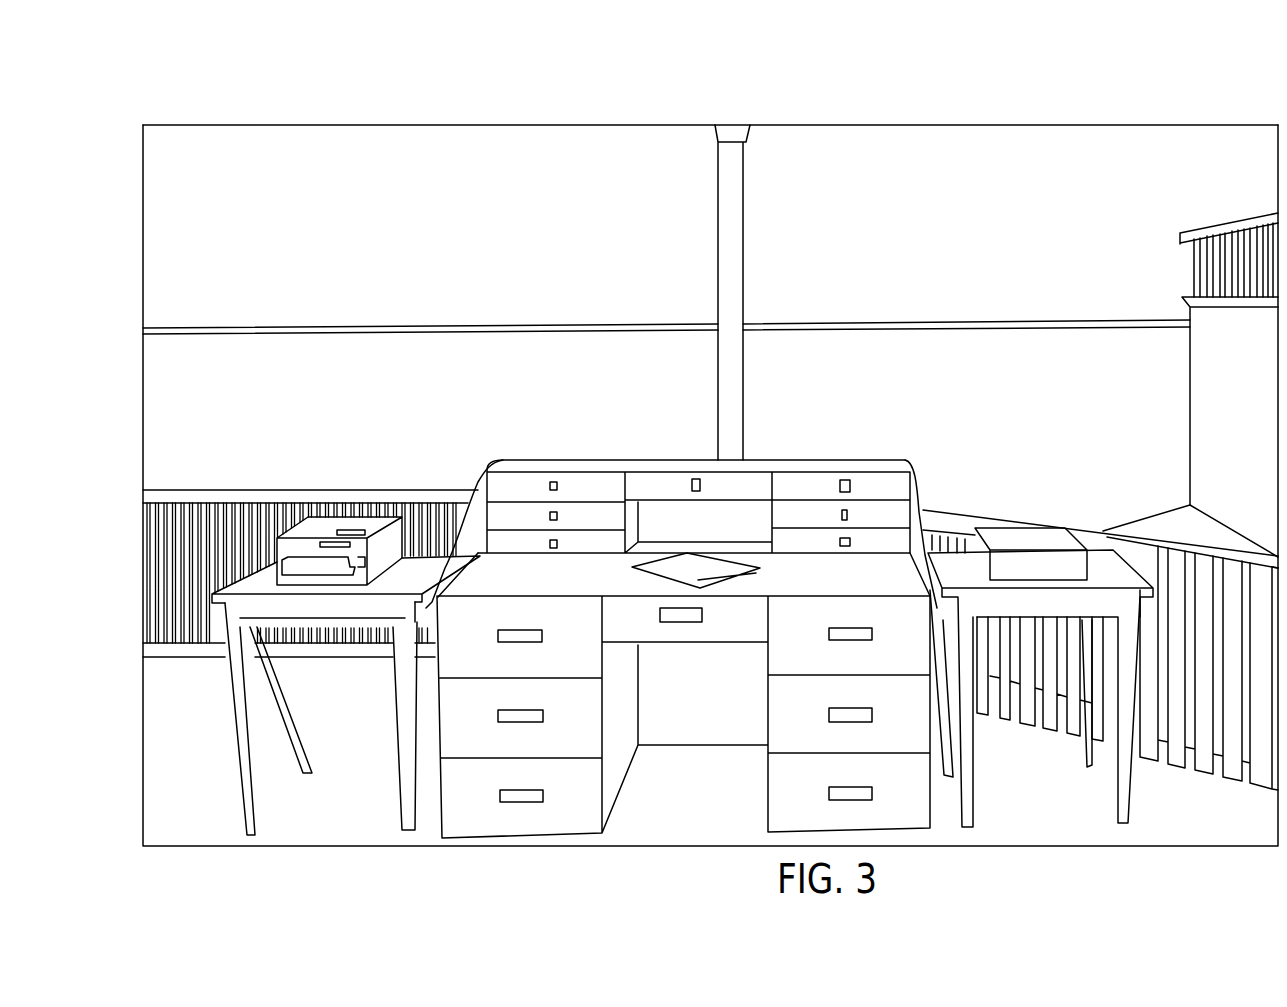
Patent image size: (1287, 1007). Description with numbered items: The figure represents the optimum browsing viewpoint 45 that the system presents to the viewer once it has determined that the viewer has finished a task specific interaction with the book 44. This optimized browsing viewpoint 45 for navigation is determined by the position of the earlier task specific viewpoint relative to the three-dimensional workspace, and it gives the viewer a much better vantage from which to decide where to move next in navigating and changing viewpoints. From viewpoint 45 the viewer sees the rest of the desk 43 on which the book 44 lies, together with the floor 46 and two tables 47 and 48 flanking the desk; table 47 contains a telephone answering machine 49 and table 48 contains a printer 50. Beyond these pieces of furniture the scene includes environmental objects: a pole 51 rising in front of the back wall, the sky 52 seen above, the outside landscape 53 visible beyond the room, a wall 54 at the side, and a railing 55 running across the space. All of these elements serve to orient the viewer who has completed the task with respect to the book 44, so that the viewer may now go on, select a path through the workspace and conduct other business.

The desk 43 is at (527, 575).
The book 44 is at (700, 562).
The viewpoint 45 is at (678, 848).
The floor 46 is at (346, 642).
The table 47 is at (1110, 570).
The table 48 is at (258, 588).
The telephone answering machine 49 is at (1033, 540).
The printer 50 is at (345, 480).
The pole 51 is at (735, 263).
The sky 52 is at (470, 207).
The outside landscape 53 is at (952, 405).
The wall 54 is at (1232, 382).
The railing 55 is at (307, 495).